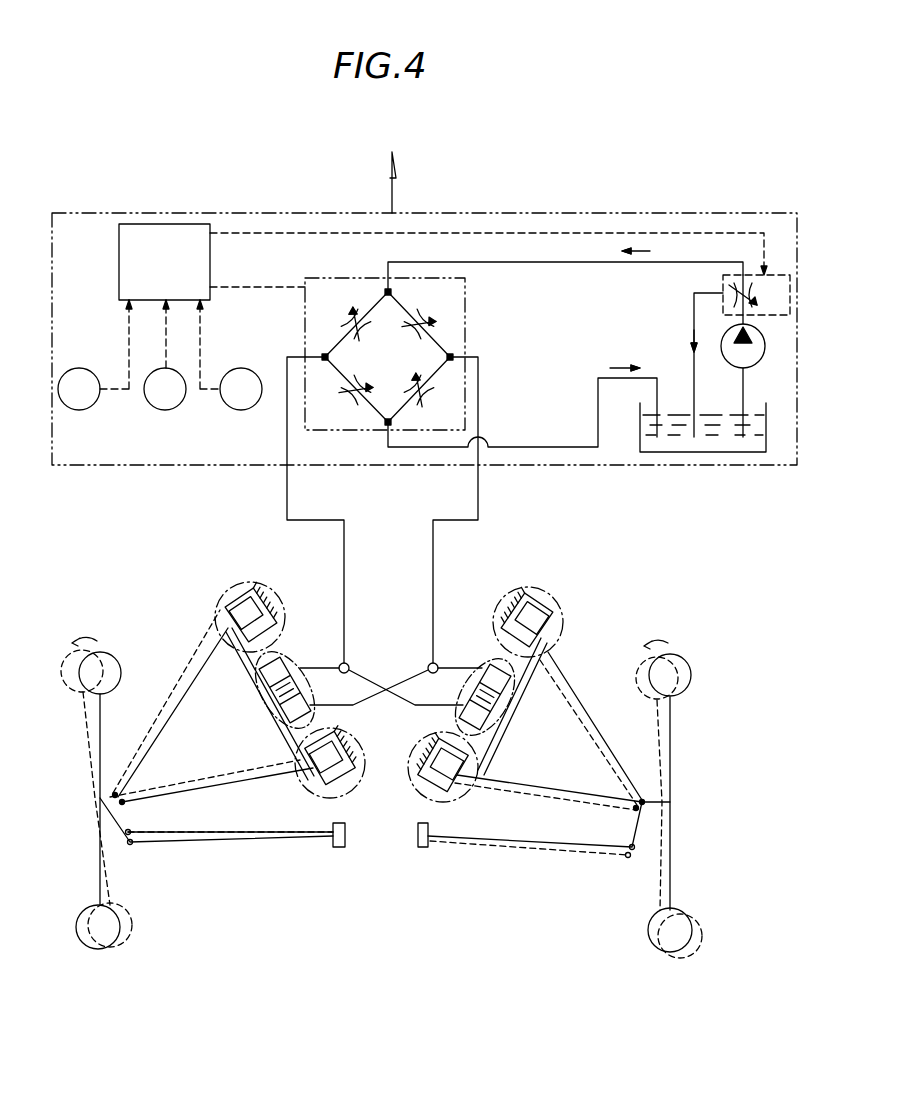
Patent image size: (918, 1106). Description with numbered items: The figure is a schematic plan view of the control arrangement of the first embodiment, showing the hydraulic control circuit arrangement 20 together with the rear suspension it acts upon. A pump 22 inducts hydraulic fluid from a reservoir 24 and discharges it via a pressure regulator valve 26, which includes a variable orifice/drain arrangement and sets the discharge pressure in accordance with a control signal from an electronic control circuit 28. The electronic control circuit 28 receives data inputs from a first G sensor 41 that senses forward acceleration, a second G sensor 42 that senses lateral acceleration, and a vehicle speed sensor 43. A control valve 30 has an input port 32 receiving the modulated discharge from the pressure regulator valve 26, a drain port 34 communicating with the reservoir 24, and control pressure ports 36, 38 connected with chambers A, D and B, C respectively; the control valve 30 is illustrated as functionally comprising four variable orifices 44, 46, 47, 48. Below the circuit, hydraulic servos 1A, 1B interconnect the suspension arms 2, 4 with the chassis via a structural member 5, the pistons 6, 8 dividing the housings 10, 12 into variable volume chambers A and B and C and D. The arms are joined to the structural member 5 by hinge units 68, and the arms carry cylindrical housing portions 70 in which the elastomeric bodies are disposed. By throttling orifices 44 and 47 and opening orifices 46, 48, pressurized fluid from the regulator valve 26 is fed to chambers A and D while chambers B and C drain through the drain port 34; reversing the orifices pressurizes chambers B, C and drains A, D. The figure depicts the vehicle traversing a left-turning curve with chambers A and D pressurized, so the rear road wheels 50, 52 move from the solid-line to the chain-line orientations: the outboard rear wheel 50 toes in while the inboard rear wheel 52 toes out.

The hydraulic control circuit arrangement 20 is at (594, 213).
The electronic control circuit 28 is at (183, 224).
The first G sensor 41 is at (79, 410).
The second G sensor 42 is at (165, 410).
The vehicle speed sensor 43 is at (241, 410).
The control valve 30 is at (466, 328).
The input port 32 is at (386, 290).
The drain port 34 is at (388, 425).
The control pressure port 36 is at (452, 359).
The control pressure port 38 is at (323, 355).
The variable orifice 44 is at (350, 318).
The variable orifice 46 is at (352, 395).
The variable orifice 47 is at (425, 395).
The variable orifice 48 is at (423, 318).
The pressure regulator valve 26 is at (723, 288).
The pump 22 is at (762, 360).
The reservoir 24 is at (720, 452).
The hinge unit 68 is at (228, 590).
The cylindrical housing portion 70 is at (250, 618).
The structural member 5 is at (265, 600).
The hydraulic servo 1B is at (295, 656).
The housing 12 is at (305, 697).
The piston 8 is at (272, 705).
The suspension arm 4 is at (190, 683).
The hydraulic servo 1A is at (478, 660).
The housing 10 is at (470, 690).
The piston 6 is at (507, 708).
The suspension arm 2 is at (574, 690).
The outboard rear wheel 50 is at (650, 925).
The inboard rear wheel 52 is at (120, 927).